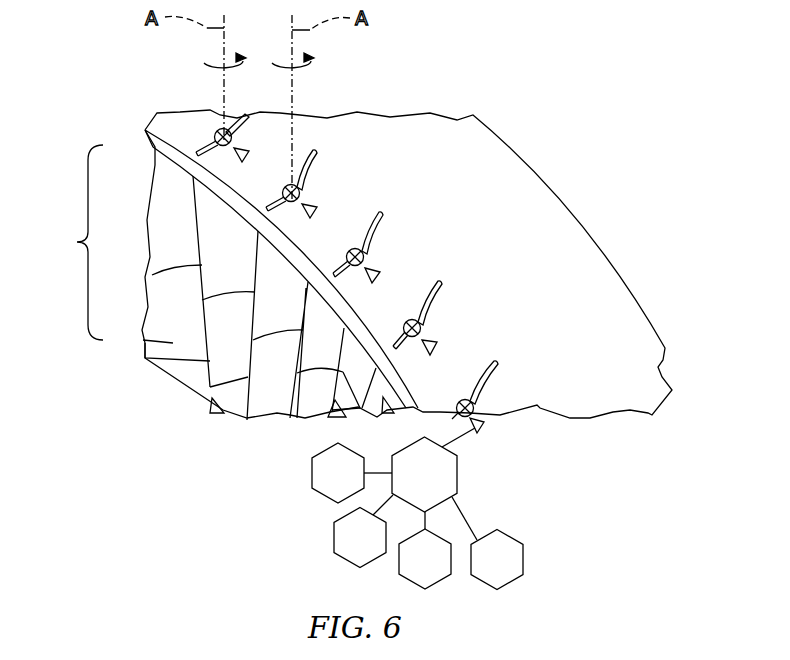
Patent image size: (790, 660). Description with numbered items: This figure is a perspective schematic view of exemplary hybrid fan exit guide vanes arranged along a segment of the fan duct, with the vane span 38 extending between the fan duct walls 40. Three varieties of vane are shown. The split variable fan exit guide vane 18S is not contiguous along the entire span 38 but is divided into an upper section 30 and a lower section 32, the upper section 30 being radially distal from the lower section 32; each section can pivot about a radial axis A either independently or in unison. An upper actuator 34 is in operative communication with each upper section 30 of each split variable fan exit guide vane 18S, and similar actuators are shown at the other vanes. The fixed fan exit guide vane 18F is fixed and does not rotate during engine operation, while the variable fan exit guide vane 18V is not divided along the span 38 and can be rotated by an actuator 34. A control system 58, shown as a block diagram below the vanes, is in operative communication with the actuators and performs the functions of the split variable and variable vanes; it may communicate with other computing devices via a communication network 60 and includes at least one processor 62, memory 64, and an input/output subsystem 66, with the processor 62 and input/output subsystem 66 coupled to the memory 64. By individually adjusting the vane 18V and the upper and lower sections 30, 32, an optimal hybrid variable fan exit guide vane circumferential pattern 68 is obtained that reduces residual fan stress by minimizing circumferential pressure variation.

The fan duct walls 40 is at (160, 122).
The split variable fan exit guide vane 18S is at (205, 147).
The fixed fan exit guide vane 18F is at (378, 224).
The variable fan exit guide vane 18V is at (513, 362).
The upper actuator 34 is at (243, 162).
The upper section 30 is at (168, 223).
The lower section 32 is at (178, 315).
The vane span 38 is at (75, 242).
The hybrid variable fan exit guide vane circumferential pattern 68 is at (141, 355).
The control system 58 is at (412, 488).
The communication network 60 is at (326, 487).
The processor 62 is at (348, 551).
The memory 64 is at (413, 573).
The input/output subsystem 66 is at (485, 573).